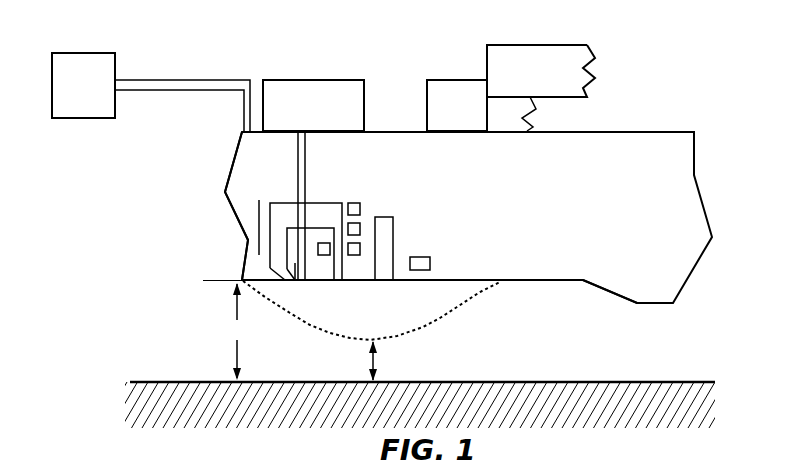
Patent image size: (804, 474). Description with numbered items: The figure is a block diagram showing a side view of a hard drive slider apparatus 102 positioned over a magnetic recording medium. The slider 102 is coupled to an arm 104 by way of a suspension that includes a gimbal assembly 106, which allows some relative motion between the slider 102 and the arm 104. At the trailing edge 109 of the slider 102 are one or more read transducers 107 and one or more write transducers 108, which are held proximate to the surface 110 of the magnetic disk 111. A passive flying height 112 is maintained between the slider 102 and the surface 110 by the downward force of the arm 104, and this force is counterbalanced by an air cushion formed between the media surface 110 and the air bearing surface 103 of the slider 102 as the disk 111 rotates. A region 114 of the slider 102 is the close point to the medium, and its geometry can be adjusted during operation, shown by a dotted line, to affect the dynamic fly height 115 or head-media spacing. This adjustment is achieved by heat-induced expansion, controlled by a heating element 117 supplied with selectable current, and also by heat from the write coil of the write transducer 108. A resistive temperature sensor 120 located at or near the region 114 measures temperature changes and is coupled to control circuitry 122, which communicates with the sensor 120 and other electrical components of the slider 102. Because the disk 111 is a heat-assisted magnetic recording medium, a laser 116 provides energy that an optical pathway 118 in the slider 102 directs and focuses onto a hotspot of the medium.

The hard drive slider apparatus 102 is at (630, 133).
The air bearing surface 103 is at (648, 305).
The arm 104 is at (556, 45).
The gimbal assembly 106 is at (452, 80).
The read transducer 107 is at (393, 218).
The write transducer 108 is at (340, 203).
The trailing edge 109 is at (182, 189).
The surface of magnetic recording medium 110 is at (585, 381).
The magnetic disk 111 is at (673, 408).
The passive flying height 112 is at (235, 331).
The region 114 is at (485, 328).
The dynamic fly height 115 is at (396, 361).
The laser 116 is at (310, 80).
The heating element 117 is at (258, 215).
The optical pathway 118 is at (306, 170).
The resistive temperature sensor 120 is at (424, 257).
The control circuitry 122 is at (73, 120).